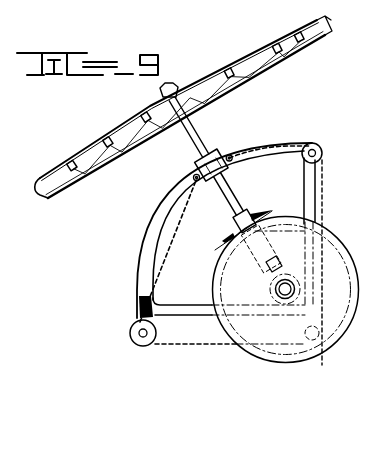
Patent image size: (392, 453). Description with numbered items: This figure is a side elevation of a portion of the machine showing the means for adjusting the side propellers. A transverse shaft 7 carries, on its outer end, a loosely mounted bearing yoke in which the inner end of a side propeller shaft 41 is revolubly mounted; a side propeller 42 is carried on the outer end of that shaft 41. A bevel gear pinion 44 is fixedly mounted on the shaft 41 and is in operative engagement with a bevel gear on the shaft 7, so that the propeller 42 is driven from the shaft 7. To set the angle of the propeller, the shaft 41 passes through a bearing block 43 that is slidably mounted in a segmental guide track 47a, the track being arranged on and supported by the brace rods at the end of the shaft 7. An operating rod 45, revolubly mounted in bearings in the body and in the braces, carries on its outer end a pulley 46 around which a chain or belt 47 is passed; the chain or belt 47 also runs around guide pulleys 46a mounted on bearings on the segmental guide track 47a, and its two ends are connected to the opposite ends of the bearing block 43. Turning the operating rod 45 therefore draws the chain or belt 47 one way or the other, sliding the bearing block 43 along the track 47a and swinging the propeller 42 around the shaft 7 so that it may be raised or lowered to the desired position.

The shaft 7 is at (280, 291).
The side propeller shaft 41 is at (198, 137).
The side propeller 42 is at (93, 173).
The bearing block 43 is at (195, 170).
The bevel gear pinion 44 is at (215, 250).
The operating rod 45 is at (314, 341).
The pulley 46 is at (303, 336).
The guide pulley 46a is at (318, 145).
The chain or belt 47 is at (323, 197).
The segmental guide track 47a is at (140, 246).